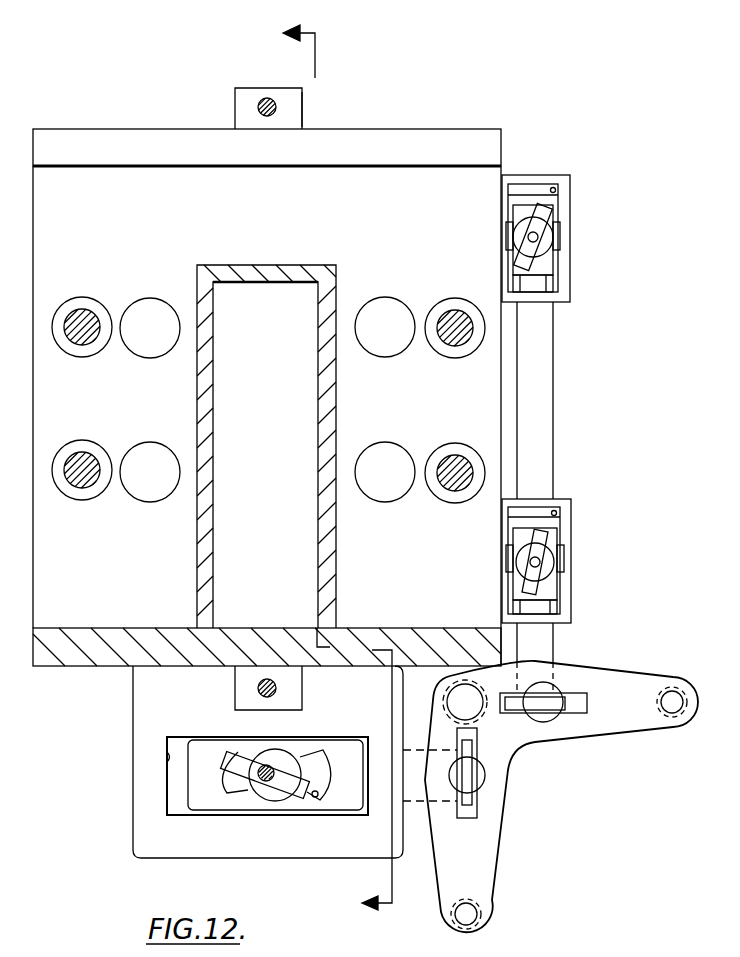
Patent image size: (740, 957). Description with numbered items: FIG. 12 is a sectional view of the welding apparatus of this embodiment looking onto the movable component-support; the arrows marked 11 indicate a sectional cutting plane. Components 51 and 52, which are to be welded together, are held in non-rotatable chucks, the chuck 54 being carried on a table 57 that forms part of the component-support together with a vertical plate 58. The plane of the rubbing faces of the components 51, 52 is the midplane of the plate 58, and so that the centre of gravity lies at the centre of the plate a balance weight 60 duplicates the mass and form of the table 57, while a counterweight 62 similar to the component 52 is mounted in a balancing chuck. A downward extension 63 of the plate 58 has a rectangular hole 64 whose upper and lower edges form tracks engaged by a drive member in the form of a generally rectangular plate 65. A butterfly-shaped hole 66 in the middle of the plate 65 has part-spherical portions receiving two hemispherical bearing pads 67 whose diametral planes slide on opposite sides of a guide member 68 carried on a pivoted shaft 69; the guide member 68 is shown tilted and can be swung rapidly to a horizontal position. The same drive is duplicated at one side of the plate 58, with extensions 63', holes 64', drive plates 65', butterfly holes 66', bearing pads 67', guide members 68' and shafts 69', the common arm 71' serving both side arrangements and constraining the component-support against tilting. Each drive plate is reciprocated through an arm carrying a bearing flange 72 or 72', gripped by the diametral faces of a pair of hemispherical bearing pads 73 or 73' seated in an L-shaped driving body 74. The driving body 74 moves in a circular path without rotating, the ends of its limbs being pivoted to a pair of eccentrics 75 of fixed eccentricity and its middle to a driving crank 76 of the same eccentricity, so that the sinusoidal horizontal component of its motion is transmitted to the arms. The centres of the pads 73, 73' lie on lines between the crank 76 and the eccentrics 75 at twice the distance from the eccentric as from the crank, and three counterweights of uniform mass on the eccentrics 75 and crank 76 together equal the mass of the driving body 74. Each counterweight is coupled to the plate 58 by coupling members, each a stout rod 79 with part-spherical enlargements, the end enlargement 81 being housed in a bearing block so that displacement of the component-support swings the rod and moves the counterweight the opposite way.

The section line 11- 11 is at (323, 470).
The component 51 is at (267, 98).
The component 52 is at (256, 114).
The chuck 54 is at (300, 117).
The table 57 is at (412, 140).
The vertical plate 58 is at (126, 247).
The balance weight 60 is at (210, 452).
The counterweight 62 is at (266, 678).
The downward extension 63 is at (271, 762).
The rectangular hole 64 is at (229, 776).
The plate 65 is at (260, 818).
The hole 66 is at (300, 858).
The bearing pads 67 is at (303, 795).
The guide member 68 is at (256, 747).
The shaft 69 is at (249, 830).
The rod 79 is at (96, 345).
The enlargement 81 is at (138, 305).
The downward extension 63' is at (569, 399).
The rectangular hole 64' is at (572, 388).
The plate 65' is at (571, 409).
The hole 66' is at (570, 232).
The bearing pads 67' is at (574, 410).
The guide member 68' is at (579, 579).
The shaft 69' is at (497, 575).
The arm 71' is at (570, 497).
The bearing flange 72 is at (505, 776).
The bearing flange 72' is at (563, 734).
The bearing pads 73 is at (501, 774).
The bearing pads 73' is at (606, 719).
The driving body 74 is at (485, 862).
The eccentrics 75 is at (672, 714).
The driving crank 76 is at (458, 697).